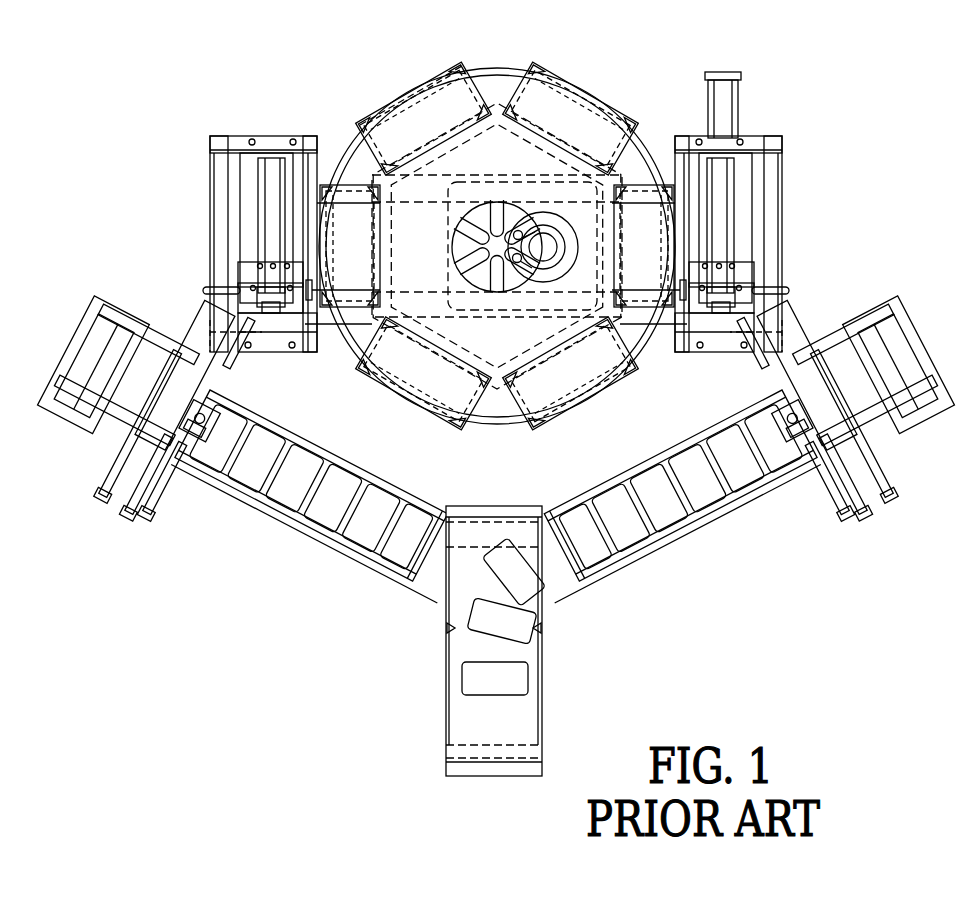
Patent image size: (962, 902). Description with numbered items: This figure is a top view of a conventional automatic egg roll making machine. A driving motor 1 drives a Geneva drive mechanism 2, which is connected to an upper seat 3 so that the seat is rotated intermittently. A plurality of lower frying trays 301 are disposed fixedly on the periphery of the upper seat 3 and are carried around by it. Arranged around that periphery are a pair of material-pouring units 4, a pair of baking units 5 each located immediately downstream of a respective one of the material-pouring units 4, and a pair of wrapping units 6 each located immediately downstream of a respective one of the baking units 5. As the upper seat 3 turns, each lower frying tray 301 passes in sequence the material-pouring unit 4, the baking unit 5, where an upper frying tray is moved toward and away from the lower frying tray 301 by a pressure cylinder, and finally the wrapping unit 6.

The driving motor 1 is at (556, 222).
The Geneva drive mechanism 2 is at (483, 200).
The upper seat 3 is at (337, 150).
The lower frying tray 301 is at (428, 82).
The material-pouring unit 4 is at (392, 96).
The baking unit 5 is at (612, 92).
The wrapping unit 6 is at (250, 210).